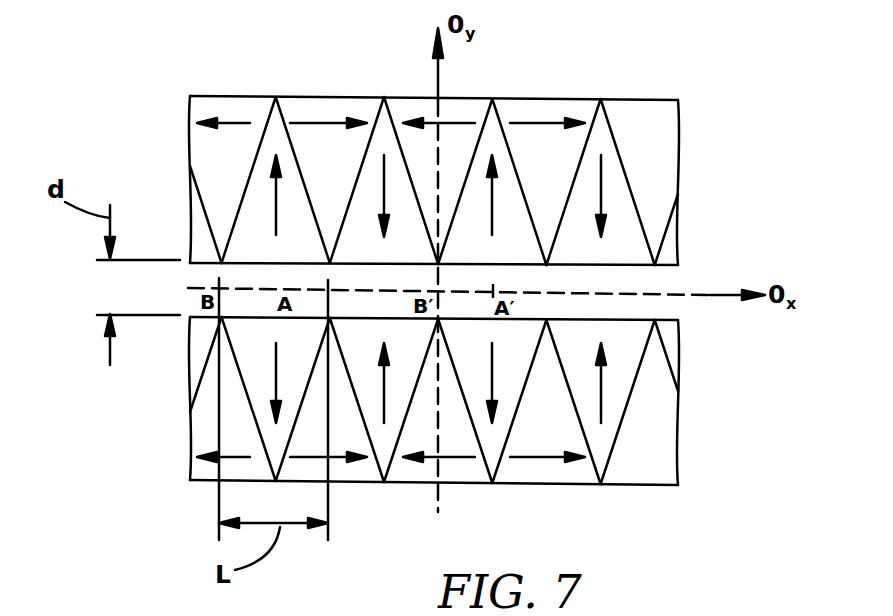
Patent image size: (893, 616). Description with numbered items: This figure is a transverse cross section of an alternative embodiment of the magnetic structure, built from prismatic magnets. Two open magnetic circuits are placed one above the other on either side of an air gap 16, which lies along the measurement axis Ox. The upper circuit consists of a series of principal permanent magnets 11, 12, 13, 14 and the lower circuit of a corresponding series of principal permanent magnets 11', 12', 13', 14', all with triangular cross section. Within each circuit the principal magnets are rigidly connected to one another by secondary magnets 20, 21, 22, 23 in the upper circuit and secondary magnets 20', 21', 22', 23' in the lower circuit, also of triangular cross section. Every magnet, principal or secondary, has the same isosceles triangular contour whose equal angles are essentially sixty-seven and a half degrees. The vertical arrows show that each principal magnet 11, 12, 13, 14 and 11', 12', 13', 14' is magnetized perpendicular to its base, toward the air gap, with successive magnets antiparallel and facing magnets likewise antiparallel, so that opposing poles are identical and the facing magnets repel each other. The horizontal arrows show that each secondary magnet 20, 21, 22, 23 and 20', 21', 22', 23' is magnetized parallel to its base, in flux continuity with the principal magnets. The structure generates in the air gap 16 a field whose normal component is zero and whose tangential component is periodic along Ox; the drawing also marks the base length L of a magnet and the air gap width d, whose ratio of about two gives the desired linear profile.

The principal permanent magnet 11 is at (225, 180).
The principal permanent magnet 12 is at (287, 180).
The principal permanent magnet 13 is at (593, 182).
The principal permanent magnet 14 is at (653, 182).
The air gap 16 is at (650, 281).
The secondary magnet 20 is at (216, 81).
The secondary magnet 21 is at (323, 81).
The secondary magnet 22 is at (420, 81).
The secondary magnet 23 is at (549, 82).
The principal permanent magnet 11' is at (225, 399).
The principal permanent magnet 12' is at (287, 400).
The principal permanent magnet 13' is at (596, 401).
The principal permanent magnet 14' is at (657, 402).
The secondary magnet 20' is at (192, 487).
The secondary magnet 21' is at (349, 496).
The secondary magnet 22' is at (460, 497).
The secondary magnet 23' is at (569, 497).